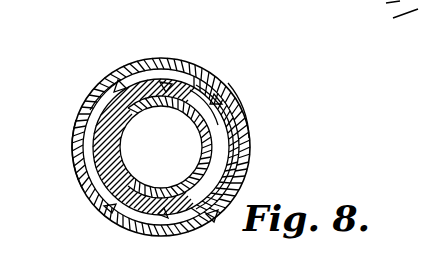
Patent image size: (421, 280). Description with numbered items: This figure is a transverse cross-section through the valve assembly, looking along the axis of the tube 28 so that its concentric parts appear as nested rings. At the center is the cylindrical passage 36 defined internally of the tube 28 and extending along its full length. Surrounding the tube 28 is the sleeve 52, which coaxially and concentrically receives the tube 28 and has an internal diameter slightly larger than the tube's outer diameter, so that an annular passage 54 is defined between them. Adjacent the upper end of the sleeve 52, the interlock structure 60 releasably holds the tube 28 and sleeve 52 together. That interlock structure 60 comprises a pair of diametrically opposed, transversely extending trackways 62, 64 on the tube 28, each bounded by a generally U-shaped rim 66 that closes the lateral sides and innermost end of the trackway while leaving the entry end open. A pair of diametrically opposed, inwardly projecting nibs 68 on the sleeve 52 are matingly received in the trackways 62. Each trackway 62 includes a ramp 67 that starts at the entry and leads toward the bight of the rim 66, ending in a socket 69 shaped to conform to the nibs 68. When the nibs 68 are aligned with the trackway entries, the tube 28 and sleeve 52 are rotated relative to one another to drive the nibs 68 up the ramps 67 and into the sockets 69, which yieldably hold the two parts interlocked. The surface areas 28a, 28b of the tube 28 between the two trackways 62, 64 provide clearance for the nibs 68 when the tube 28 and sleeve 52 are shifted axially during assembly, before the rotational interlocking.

The tube 28 is at (92, 132).
The surface area of the tube 28a is at (86, 187).
The surface area of the tube 28b is at (238, 113).
The cylindrical passage 36 is at (130, 147).
The sleeve 52 is at (264, 134).
The annular passage 54 is at (246, 147).
The interlock structure 60 is at (225, 102).
The trackway 62 is at (246, 176).
The trackway 64 is at (90, 98).
The U-shaped rim 66 is at (217, 98).
The ramp 67 is at (117, 78).
The nib 68 is at (165, 78).
The socket 69 is at (175, 103).